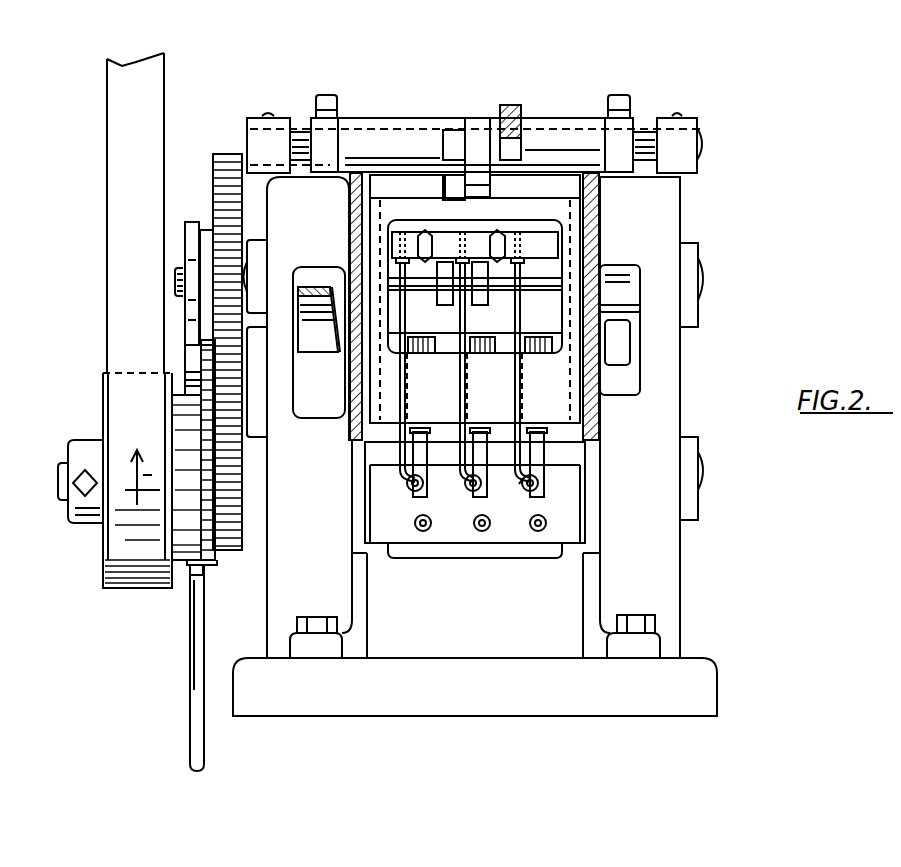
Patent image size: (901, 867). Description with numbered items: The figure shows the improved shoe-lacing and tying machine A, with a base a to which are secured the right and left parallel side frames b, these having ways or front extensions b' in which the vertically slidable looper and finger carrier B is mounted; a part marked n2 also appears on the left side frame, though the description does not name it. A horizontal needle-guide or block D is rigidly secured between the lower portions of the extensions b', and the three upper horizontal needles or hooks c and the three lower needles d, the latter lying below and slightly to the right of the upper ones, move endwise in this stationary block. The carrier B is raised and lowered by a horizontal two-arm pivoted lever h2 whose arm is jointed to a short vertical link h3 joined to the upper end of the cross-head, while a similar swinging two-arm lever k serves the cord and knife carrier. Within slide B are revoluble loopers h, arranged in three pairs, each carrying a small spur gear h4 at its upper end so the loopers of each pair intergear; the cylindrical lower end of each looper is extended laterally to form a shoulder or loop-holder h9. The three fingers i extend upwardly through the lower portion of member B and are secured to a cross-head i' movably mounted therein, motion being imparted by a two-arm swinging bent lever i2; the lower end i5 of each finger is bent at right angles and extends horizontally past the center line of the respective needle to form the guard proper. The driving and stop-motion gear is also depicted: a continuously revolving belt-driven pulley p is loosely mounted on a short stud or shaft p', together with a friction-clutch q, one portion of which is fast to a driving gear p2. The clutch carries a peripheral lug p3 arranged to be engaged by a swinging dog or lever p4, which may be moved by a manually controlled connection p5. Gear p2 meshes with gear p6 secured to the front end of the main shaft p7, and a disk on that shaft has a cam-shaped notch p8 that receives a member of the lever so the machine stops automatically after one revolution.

The machine A is at (475, 119).
The base a is at (717, 683).
The side frames b is at (475, 417).
The ways or front extensions b' is at (474, 306).
The wedge cam n2 is at (319, 319).
The horizontal two-arm pivoted lever h2 is at (399, 117).
The short vertical link h3 is at (476, 118).
The swinging two-arm lever k is at (510, 105).
The looper and finger carrier B is at (460, 218).
The cross-head i' is at (475, 225).
The two-arm swinging bent lever i2 is at (495, 228).
The fingers i is at (454, 370).
The small spur gear h4 is at (420, 350).
The loopers h is at (427, 450).
The upper horizontal needles or hooks c is at (407, 483).
The shoulder or loop-holder h9 is at (468, 492).
The lower end of finger i5 is at (520, 485).
The needle-guide or block D is at (475, 492).
The lower needles d is at (415, 523).
The belt-driven pulley p is at (121, 320).
The short stud or shaft p' is at (65, 481).
The driving gear p2 is at (215, 545).
The peripheral lug p3 is at (190, 393).
The swinging dog or lever p4 is at (193, 362).
The manually controlled connection p5 is at (190, 630).
The gear p6 is at (213, 183).
The main shaft p7 is at (185, 275).
The cam-shaped notch p8 is at (190, 284).
The friction-clutch q is at (207, 565).